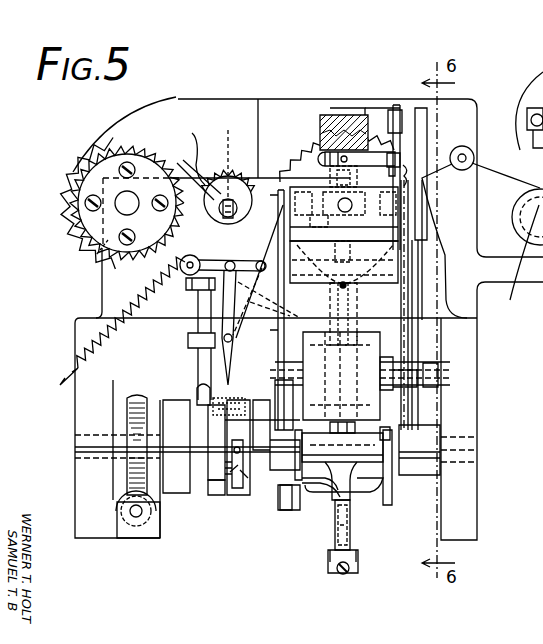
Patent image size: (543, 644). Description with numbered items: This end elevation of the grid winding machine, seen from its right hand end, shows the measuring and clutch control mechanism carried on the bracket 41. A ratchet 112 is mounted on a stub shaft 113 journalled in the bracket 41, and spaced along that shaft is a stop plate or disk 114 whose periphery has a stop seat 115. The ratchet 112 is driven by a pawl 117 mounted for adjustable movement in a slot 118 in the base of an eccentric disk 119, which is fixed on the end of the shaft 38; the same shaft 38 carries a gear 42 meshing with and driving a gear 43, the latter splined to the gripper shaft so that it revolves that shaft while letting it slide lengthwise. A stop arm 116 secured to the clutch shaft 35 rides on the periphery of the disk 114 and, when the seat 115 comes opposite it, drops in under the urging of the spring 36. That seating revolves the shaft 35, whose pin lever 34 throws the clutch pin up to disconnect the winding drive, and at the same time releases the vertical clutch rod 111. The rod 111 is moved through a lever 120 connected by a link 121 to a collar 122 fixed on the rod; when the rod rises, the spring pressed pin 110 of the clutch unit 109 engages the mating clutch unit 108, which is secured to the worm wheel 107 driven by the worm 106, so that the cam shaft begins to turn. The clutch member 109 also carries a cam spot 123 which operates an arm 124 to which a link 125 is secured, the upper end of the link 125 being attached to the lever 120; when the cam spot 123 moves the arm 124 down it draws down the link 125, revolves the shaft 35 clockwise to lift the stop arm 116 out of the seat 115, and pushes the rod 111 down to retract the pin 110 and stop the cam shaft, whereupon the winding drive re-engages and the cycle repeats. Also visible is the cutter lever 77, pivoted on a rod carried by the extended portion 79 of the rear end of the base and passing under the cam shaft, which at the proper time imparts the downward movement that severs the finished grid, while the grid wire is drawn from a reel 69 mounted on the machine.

The pin lever 34 is at (298, 318).
The clutch shaft 35 is at (233, 260).
The spring 36 is at (343, 286).
The shaft 38 is at (228, 178).
The bracket 41 is at (172, 108).
The gear 42 is at (242, 176).
The gear 43 is at (306, 140).
The reel 69 is at (522, 263).
The cutter lever 77 is at (375, 493).
The extended portion of the base 79 is at (178, 455).
The worm 106 is at (142, 518).
The worm wheel 107 is at (137, 398).
The clutch unit 108 is at (172, 400).
The clutch unit 109 is at (217, 488).
The spring pressed pin 110 is at (220, 400).
The vertical clutch rod 111 is at (197, 388).
The ratchet 112 is at (78, 173).
The stub shaft 113 is at (127, 200).
The stop plate or disk 114 is at (100, 240).
The stop seat 115 is at (82, 206).
The stop arm 116 is at (217, 238).
The pawl 117 is at (196, 140).
The slot 118 is at (220, 175).
The eccentric disk 119 is at (240, 195).
The lever 120 is at (252, 262).
The link 121 is at (254, 308).
The collar 122 is at (188, 338).
The cam spot 123 is at (246, 468).
The arm 124 is at (238, 490).
The link 125 is at (233, 342).